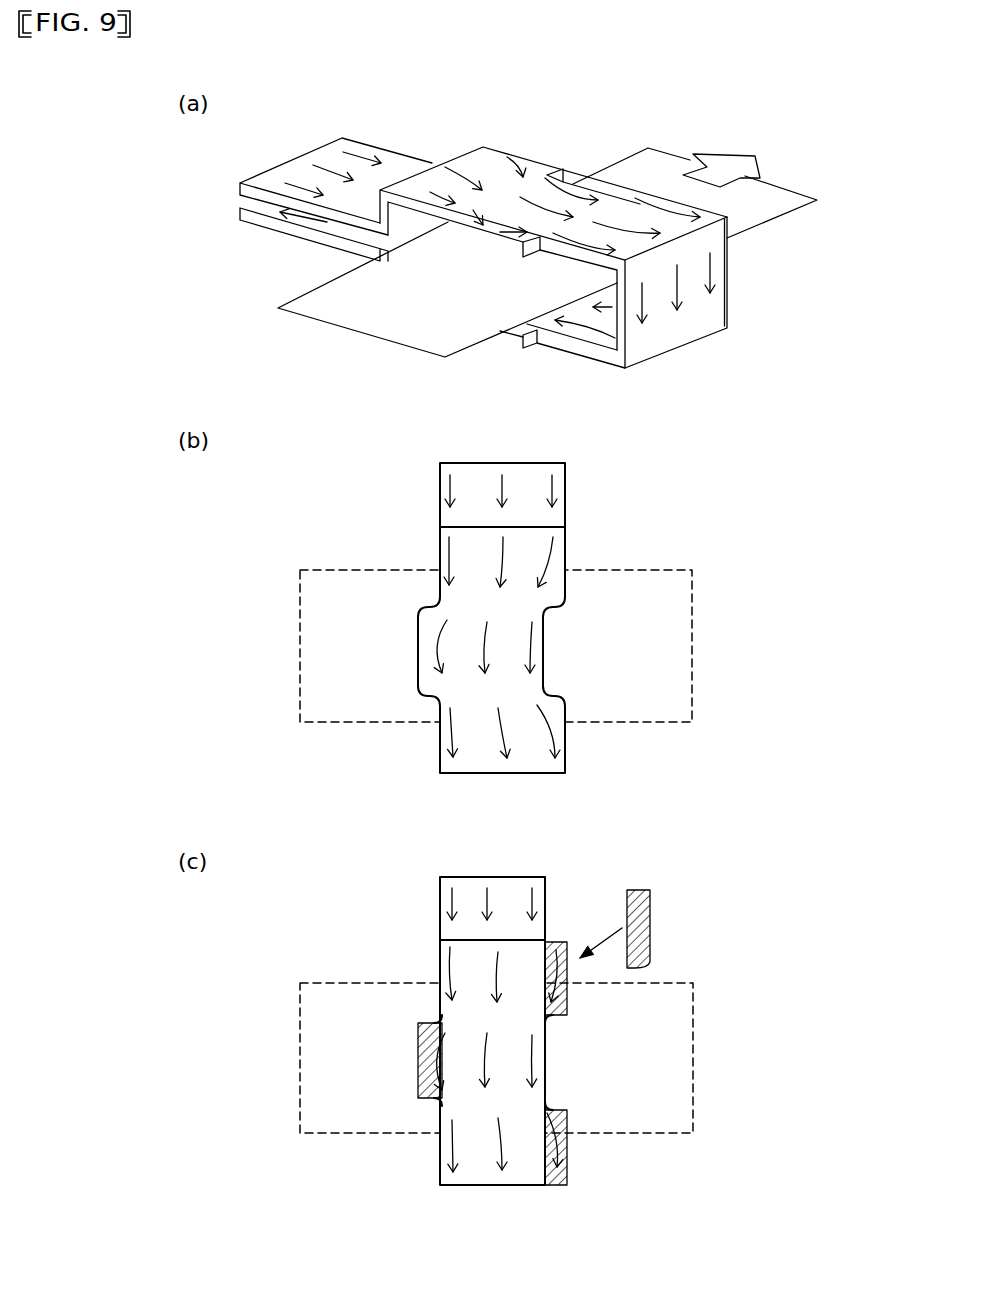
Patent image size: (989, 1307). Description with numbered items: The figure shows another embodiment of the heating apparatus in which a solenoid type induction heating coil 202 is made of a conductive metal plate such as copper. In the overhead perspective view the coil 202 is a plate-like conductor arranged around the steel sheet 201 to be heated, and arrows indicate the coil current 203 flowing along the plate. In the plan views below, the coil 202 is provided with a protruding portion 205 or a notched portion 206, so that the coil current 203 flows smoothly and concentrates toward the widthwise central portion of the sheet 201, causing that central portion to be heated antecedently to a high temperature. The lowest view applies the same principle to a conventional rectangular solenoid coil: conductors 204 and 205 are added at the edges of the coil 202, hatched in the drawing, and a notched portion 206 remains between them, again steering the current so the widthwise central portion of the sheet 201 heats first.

The base plate 201 is at (752, 210).
The solenoid type induction heating coil 202 is at (728, 305).
The coil current 203 is at (362, 160).
The conductor 204 is at (652, 930).
The protruding portion 205 is at (425, 663).
The notched portion 206 is at (553, 665).